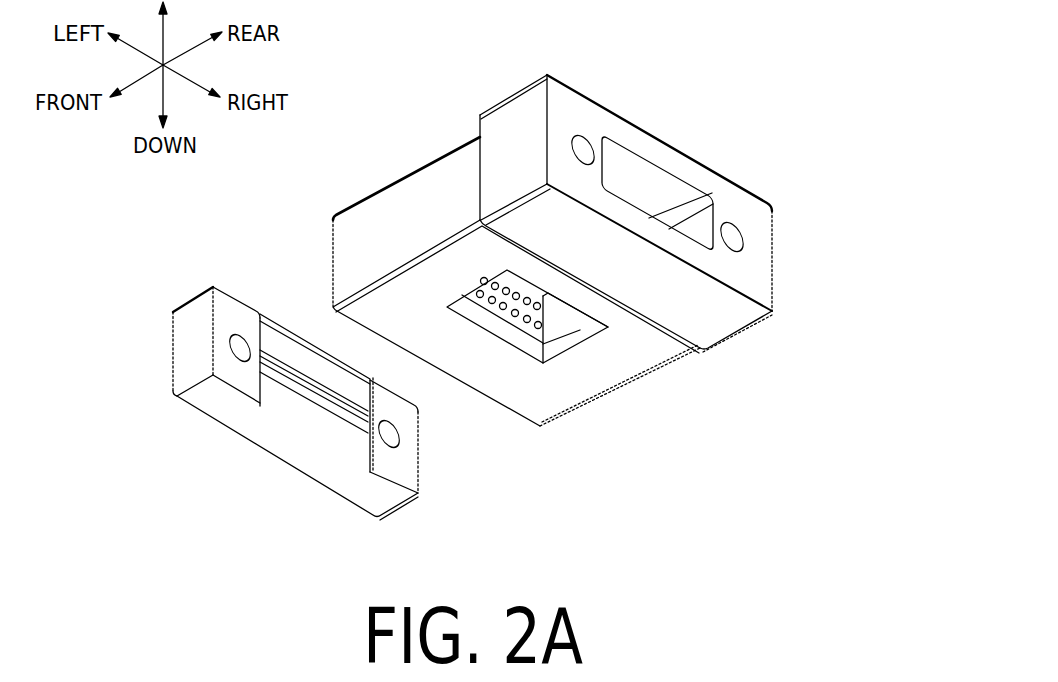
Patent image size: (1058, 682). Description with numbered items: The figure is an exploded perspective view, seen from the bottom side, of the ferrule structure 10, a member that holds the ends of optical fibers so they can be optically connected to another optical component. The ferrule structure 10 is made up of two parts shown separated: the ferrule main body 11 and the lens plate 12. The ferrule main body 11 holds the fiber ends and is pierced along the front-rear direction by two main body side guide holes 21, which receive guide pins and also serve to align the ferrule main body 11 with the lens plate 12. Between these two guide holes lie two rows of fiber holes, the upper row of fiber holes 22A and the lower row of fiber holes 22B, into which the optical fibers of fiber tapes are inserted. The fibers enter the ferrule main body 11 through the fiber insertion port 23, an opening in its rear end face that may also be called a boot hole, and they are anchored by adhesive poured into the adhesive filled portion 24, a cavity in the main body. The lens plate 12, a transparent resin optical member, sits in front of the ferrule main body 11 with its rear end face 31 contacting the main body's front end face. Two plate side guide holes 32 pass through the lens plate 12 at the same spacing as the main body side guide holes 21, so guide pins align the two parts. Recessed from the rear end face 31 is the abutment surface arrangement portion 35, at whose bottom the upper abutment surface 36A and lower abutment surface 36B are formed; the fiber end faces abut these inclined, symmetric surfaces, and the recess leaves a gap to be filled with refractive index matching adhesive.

The ferrule structure 10 is at (445, 299).
The ferrule main body 11 is at (399, 147).
The lens plate 12 is at (184, 270).
The main body side guide hole 21 is at (584, 148).
The fiber hole 22A is at (522, 297).
The fiber hole 22B is at (503, 309).
The fiber insertion port 23 is at (648, 172).
The adhesive filled portion 24 is at (585, 348).
The rear end face 31 is at (237, 378).
The plate side guide hole 32 is at (238, 348).
The abutment surface arrangement portion 35 is at (321, 445).
The upper abutment surface 36A is at (285, 366).
The lower abutment surface 36B is at (283, 384).